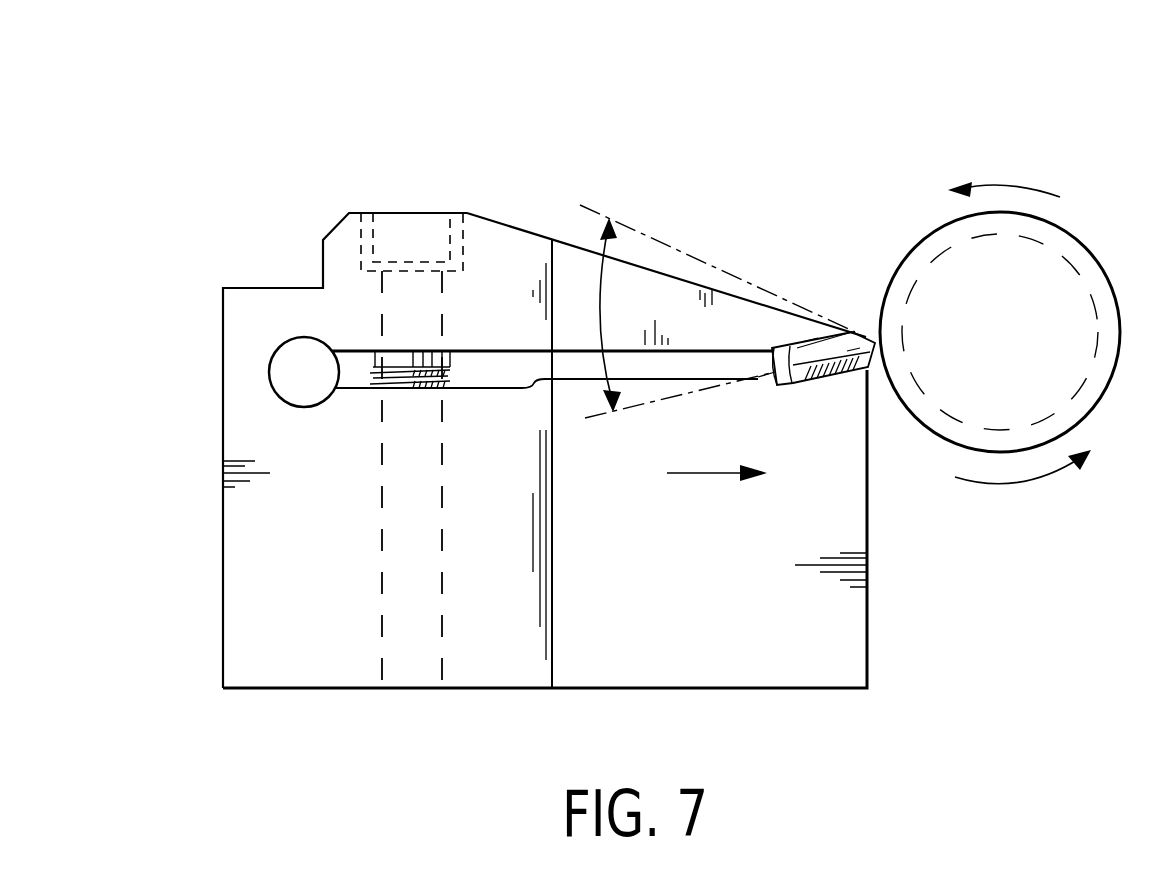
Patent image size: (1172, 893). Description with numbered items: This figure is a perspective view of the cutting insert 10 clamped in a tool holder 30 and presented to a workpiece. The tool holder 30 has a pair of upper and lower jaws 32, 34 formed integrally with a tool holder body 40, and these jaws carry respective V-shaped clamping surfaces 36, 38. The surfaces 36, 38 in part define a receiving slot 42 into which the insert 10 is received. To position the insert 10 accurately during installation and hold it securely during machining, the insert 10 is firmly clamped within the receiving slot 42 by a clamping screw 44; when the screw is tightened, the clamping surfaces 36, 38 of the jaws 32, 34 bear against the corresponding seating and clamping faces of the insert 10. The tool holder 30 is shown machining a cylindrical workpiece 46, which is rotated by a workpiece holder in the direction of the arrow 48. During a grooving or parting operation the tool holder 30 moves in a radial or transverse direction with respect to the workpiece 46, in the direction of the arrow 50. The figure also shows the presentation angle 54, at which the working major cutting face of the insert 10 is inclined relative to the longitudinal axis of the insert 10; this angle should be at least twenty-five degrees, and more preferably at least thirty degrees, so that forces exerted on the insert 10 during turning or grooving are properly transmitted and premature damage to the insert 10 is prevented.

The insert 10 is at (845, 292).
The tool holder 30 is at (306, 202).
The upper jaw 32 is at (508, 267).
The lower jaw 34 is at (798, 642).
The V-shaped clamping surface 36 is at (783, 345).
The V-shaped clamping surface 38 is at (827, 385).
The tool holder body 40 is at (260, 307).
The receiving slot 42 is at (490, 370).
The clamping screw 44 is at (402, 212).
The cylindrical workpiece 46 is at (1052, 287).
The arrow 48 is at (1023, 185).
The arrow 50 is at (695, 477).
The presentation angle 54 is at (590, 292).